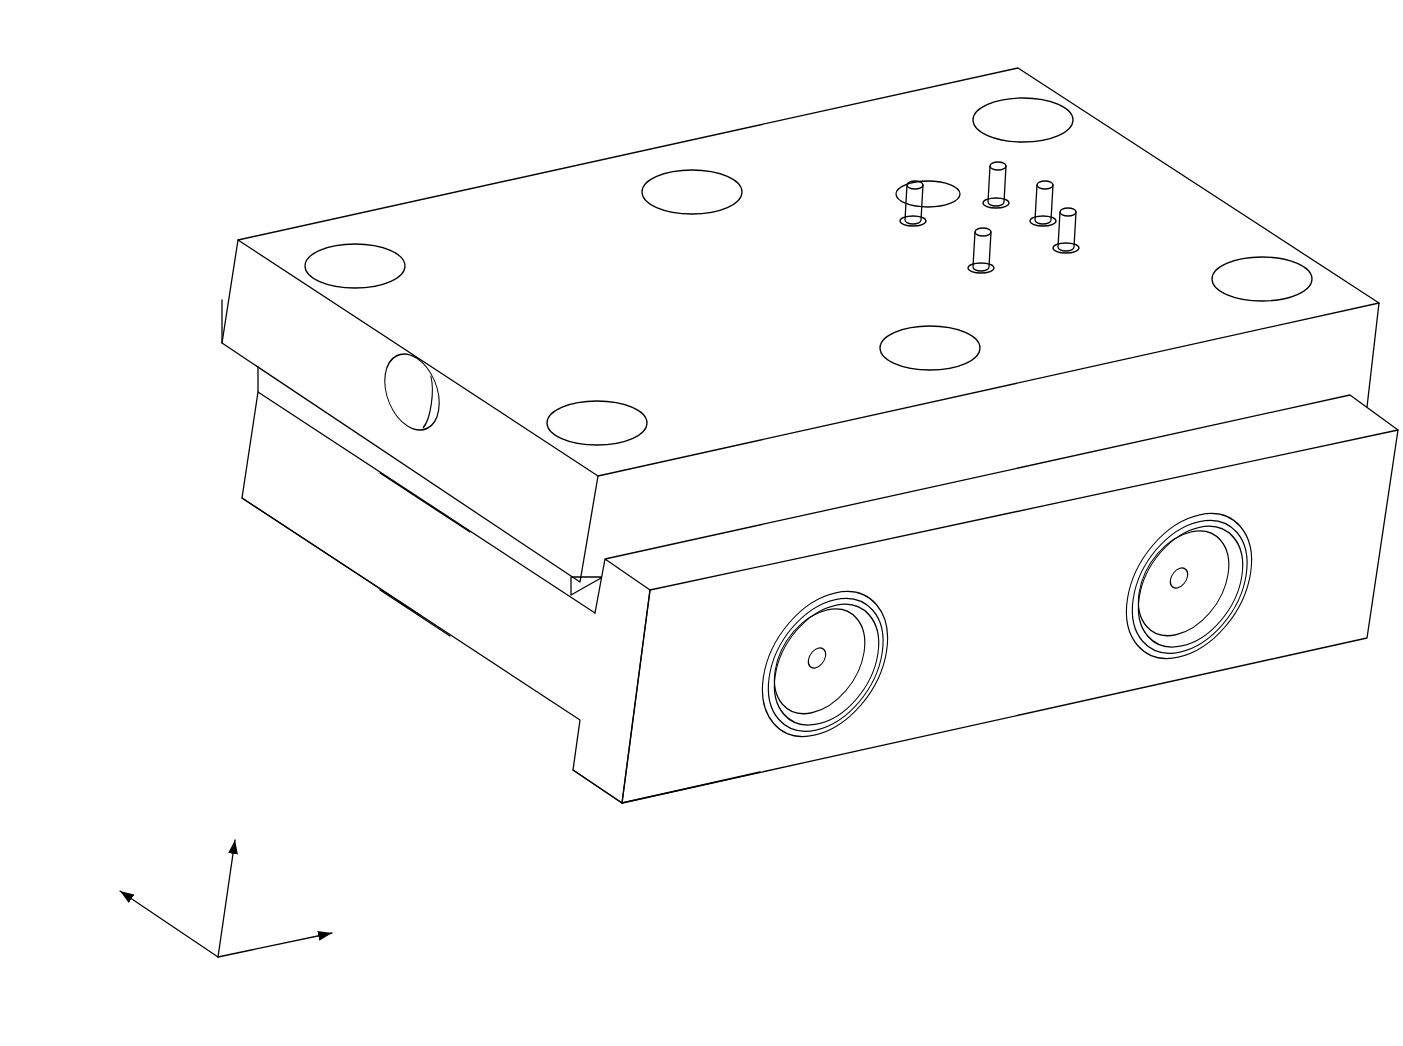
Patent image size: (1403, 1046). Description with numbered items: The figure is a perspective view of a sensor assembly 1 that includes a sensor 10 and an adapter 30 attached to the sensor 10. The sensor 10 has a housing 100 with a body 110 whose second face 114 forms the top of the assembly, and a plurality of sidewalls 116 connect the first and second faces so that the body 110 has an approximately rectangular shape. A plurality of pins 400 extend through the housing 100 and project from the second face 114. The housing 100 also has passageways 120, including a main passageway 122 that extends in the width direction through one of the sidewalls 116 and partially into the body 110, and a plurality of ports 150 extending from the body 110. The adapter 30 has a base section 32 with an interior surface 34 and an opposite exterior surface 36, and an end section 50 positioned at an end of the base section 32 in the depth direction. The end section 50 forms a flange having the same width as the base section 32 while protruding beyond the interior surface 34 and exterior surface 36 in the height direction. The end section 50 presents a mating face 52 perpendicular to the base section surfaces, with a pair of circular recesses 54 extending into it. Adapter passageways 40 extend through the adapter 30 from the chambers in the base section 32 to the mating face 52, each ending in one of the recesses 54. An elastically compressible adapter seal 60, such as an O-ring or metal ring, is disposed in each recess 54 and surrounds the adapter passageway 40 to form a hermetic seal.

The sensor assembly 1 is at (252, 78).
The sensor 10 is at (1139, 140).
The housing 100 is at (1214, 193).
The body 110 is at (221, 272).
The second face 114 is at (578, 183).
The sidewalls 116 is at (228, 327).
The passageways 120 is at (406, 395).
The main passageway 122 is at (429, 403).
The ports 150 is at (254, 385).
The pins 400 is at (1058, 237).
The adapter 30 is at (531, 695).
The base section 32 is at (273, 526).
The interior surface 34 is at (443, 515).
The exterior surface 36 is at (416, 612).
The end section 50 is at (585, 786).
The mating face 52 is at (680, 775).
The recesses 54 is at (796, 741).
The adapter passageways 40 is at (820, 668).
The adapter seal 60 is at (858, 680).